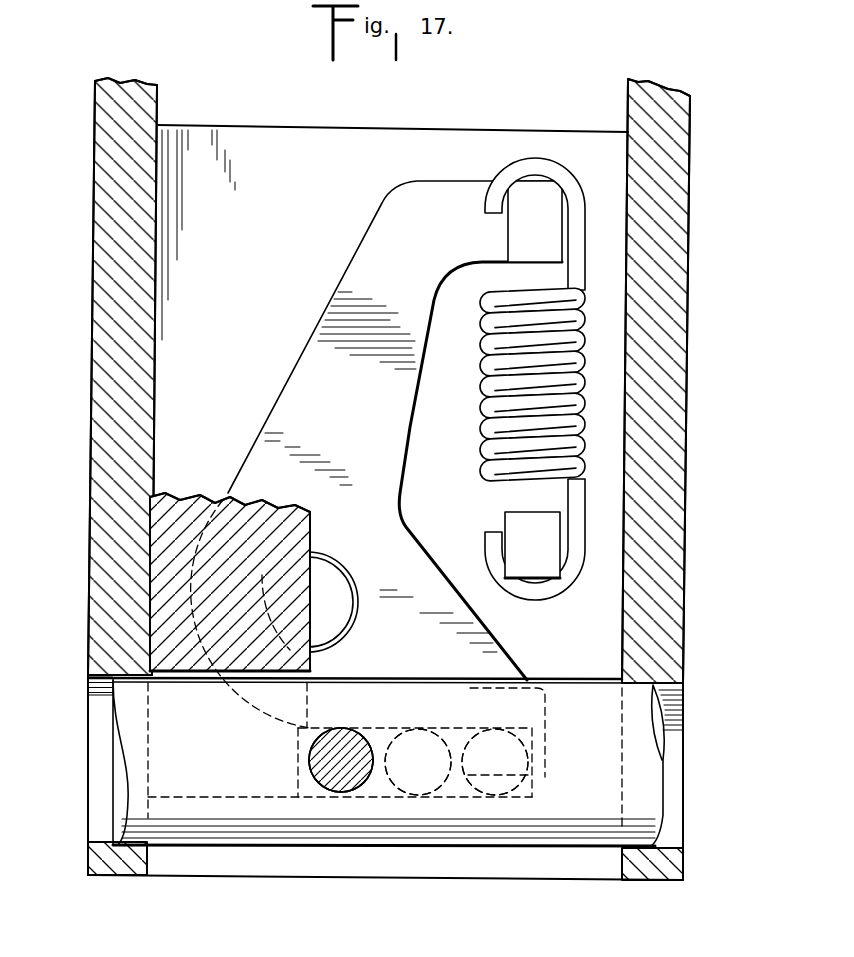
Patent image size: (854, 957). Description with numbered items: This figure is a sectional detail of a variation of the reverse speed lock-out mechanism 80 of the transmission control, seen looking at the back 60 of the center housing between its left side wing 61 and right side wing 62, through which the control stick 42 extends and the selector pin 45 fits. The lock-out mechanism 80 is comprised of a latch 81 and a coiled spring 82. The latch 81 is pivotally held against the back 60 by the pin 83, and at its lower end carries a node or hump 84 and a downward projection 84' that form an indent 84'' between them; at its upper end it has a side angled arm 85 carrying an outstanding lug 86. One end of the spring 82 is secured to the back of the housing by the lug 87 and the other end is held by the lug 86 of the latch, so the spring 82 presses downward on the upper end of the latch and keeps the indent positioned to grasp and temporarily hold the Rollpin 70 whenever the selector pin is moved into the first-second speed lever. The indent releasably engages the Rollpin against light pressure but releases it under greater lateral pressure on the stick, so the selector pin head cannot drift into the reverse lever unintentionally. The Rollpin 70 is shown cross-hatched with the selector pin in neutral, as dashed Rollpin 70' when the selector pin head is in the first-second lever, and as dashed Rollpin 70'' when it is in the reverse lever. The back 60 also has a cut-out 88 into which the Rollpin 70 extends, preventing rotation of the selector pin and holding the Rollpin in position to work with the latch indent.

The control stick 42 is at (180, 518).
The selector pin 45 is at (165, 738).
The back section of center housing 60 is at (268, 142).
The left side wing 61 is at (97, 372).
The right side wing 62 is at (683, 392).
The Rollpin 70 is at (341, 826).
The Rollpin in first-second lever position 70' is at (418, 826).
The Rollpin in reverse lever position 70'' is at (495, 826).
The lock-out mechanism 80 is at (305, 328).
The latch 81 is at (400, 437).
The coiled spring 82 is at (568, 343).
The pin 83 is at (342, 582).
The node or hump 84 is at (346, 741).
The downward projection 84' is at (523, 762).
The indent 84'' is at (429, 743).
The side angled arm 85 is at (456, 187).
The lug 86 is at (547, 212).
The lug 87 is at (533, 563).
The cut-out 88 is at (295, 785).